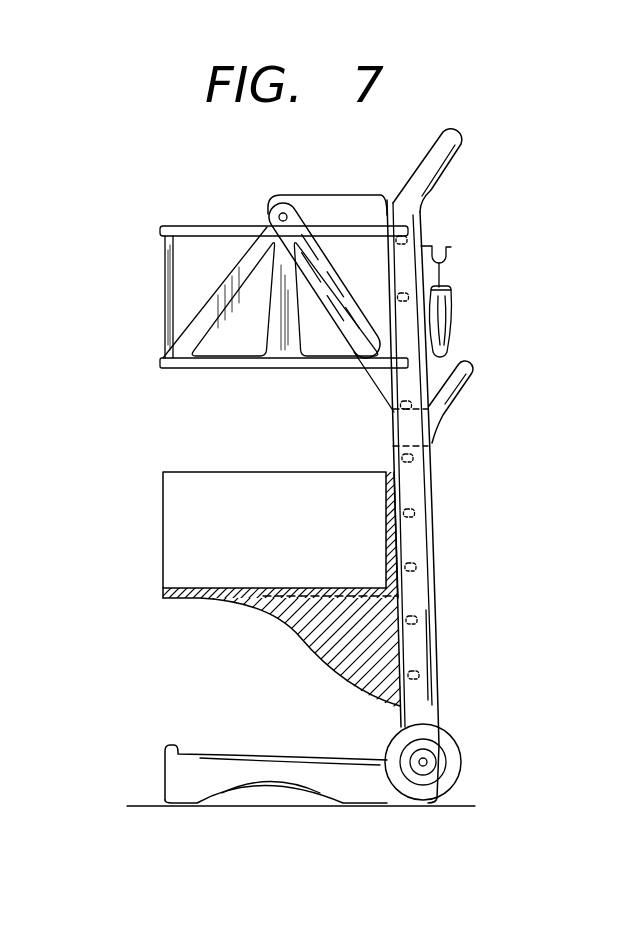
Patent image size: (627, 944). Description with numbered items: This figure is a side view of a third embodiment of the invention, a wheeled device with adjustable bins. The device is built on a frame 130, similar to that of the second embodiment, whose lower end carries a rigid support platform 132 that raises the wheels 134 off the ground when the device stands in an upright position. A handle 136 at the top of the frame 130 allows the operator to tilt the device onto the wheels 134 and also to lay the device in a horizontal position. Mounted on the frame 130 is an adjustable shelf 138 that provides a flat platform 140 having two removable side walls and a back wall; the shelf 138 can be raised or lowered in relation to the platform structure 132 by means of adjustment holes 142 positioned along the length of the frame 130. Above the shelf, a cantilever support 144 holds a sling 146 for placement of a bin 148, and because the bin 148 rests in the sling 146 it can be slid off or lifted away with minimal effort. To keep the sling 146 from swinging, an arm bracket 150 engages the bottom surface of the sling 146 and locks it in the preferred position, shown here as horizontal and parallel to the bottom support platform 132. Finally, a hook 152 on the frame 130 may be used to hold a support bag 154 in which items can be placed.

The frame 130 is at (433, 483).
The rigid support platform 132 is at (165, 758).
The wheels 134 is at (460, 757).
The handle 136 is at (460, 137).
The adjustable shelf 138 is at (396, 616).
The flat platform 140 is at (182, 589).
The adjustment holes 142 is at (407, 567).
The cantilever support 144 is at (277, 197).
The sling 146 is at (160, 363).
The bin 148 is at (207, 276).
The arm bracket 150 is at (470, 365).
The hook 152 is at (447, 251).
The support bag 154 is at (452, 307).